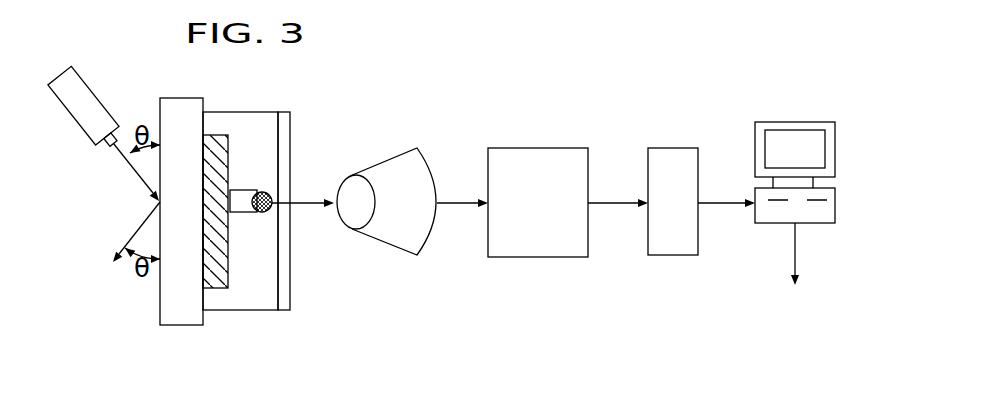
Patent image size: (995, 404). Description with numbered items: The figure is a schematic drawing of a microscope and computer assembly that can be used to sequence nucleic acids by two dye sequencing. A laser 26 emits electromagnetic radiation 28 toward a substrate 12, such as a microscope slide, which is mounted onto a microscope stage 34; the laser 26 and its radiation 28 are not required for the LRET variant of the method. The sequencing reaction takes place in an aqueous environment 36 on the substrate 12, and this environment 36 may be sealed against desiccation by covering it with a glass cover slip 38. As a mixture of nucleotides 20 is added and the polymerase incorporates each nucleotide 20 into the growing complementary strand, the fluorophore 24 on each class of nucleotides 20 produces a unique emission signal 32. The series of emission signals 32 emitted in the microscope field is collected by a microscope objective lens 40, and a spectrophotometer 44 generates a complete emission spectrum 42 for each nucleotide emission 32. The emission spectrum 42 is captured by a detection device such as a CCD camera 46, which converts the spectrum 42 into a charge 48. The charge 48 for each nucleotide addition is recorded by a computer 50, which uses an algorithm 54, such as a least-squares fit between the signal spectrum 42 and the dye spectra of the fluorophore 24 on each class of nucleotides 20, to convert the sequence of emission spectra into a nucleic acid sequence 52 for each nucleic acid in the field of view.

The substrate 12 is at (212, 284).
The nucleotides 20 is at (240, 212).
The fluorophore 24 is at (268, 190).
The laser 26 is at (88, 87).
The electromagnetic radiation 28 is at (130, 164).
The emission signal 32 is at (302, 205).
The microscope stage 34 is at (177, 326).
The aqueous environment 36 is at (260, 311).
The glass cover slip 38 is at (287, 290).
The microscope objective lens 40 is at (383, 242).
The emission spectrum 42 is at (606, 206).
The spectrophotometer 44 is at (522, 148).
The CCD camera 46 is at (672, 148).
The charge 48 is at (718, 205).
The computer 50 is at (783, 122).
The nucleic acid sequence 52 is at (735, 302).
The algorithm 54 is at (797, 260).